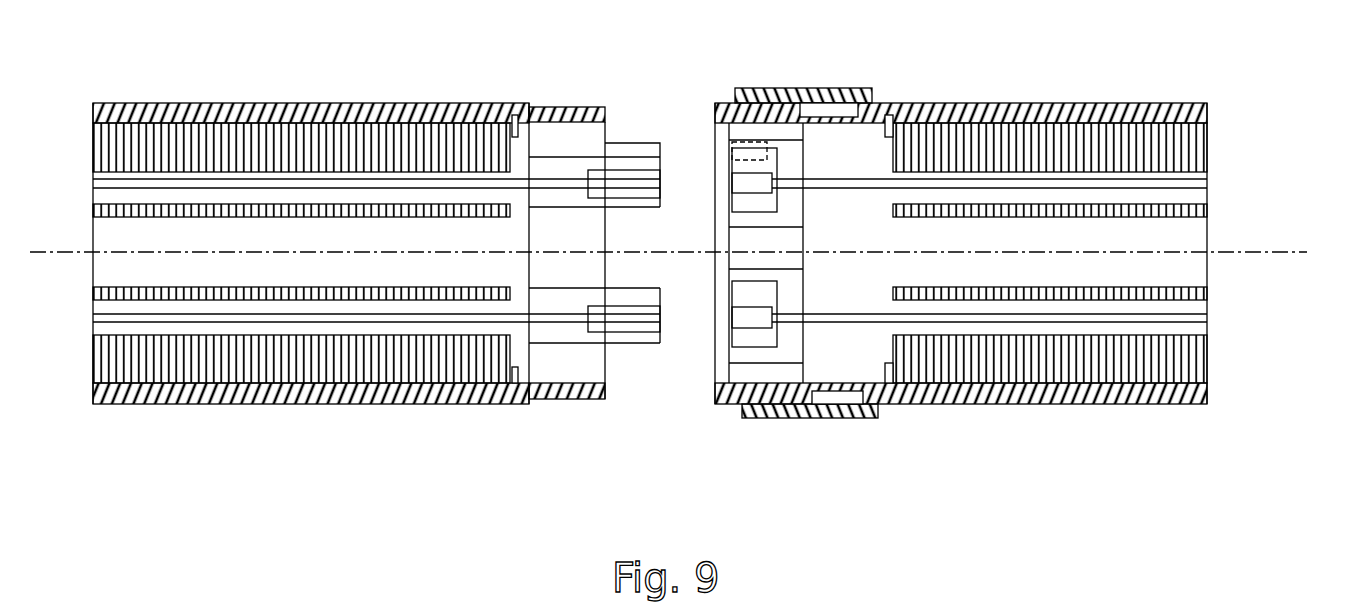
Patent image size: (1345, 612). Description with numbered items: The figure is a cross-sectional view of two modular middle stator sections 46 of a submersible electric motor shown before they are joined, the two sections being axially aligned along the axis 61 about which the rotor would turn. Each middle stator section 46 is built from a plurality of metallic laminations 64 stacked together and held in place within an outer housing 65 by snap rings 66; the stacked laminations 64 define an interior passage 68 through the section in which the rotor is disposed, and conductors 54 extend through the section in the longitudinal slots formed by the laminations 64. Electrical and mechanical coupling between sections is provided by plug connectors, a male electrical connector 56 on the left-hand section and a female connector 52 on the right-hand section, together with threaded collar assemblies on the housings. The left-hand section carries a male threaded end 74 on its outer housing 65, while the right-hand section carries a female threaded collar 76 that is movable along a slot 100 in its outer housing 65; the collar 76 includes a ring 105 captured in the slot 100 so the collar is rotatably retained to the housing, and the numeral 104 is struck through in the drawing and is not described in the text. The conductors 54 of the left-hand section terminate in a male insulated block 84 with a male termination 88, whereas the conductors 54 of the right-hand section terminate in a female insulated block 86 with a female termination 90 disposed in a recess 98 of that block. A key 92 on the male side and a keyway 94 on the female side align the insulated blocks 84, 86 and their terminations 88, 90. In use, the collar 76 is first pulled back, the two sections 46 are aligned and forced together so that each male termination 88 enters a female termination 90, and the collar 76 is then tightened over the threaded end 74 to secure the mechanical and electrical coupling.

The middle stator section 46 is at (217, 100).
The female connector 52 is at (808, 275).
The conductors 54 is at (412, 185).
The male electrical connector 56 is at (527, 270).
The axis 61 is at (1265, 253).
The metallic laminations 64 is at (1035, 367).
The outer housing 65 is at (250, 404).
The snap rings 66 is at (518, 404).
The interior passage 68 is at (1190, 270).
The male threaded end 74 is at (590, 106).
The female threaded collar 76 is at (782, 88).
The male insulated block 84 is at (547, 200).
The female insulated block 86 is at (790, 163).
The male termination 88 is at (642, 320).
The female termination 90 is at (738, 318).
The key 92 is at (632, 143).
The keyway 94 is at (730, 152).
The recess 98 is at (738, 202).
The slot 100 is at (830, 395).
The tab (struck) 104 is at (902, 404).
The ring 105 is at (912, 492).